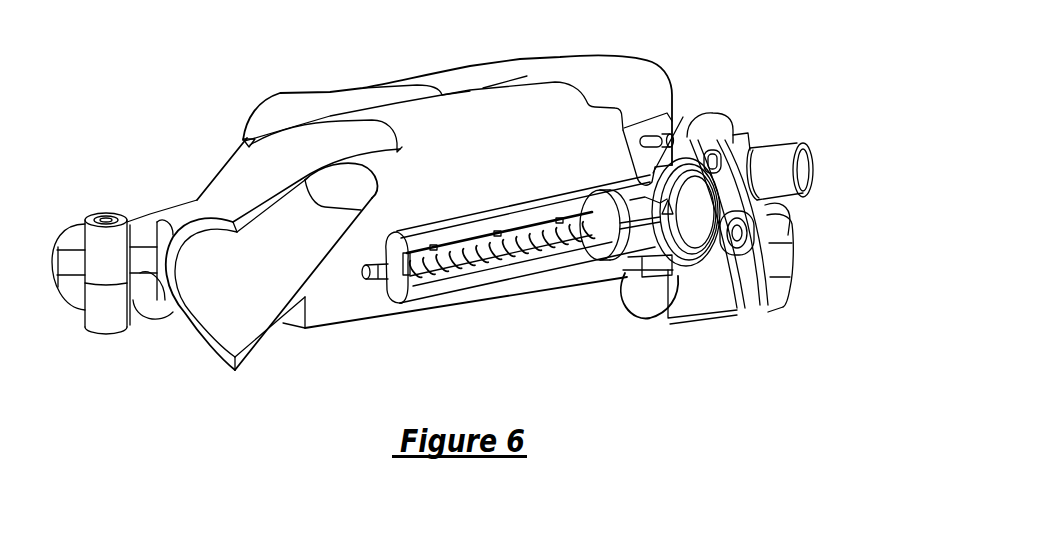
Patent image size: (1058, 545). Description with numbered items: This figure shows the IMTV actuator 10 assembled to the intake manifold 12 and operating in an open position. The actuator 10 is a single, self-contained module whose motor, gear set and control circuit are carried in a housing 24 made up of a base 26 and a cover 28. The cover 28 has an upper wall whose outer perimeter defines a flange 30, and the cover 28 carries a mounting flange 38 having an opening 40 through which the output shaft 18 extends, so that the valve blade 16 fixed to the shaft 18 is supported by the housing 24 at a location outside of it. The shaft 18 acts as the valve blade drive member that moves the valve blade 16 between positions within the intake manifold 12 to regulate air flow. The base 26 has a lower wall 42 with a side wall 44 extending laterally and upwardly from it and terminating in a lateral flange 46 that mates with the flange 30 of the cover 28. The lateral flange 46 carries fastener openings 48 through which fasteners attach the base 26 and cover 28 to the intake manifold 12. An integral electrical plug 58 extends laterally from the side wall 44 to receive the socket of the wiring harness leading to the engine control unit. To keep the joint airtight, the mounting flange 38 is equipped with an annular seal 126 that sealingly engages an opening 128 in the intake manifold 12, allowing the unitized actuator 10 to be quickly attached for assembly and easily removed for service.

The IMTV actuator 10 is at (766, 108).
The intake manifold 12 is at (668, 60).
The valve blade 16 is at (496, 255).
The output shaft 18 is at (386, 277).
The housing 24 is at (627, 330).
The base 26 is at (790, 270).
The cover 28 is at (718, 300).
The flange 30 is at (753, 318).
The mounting flange 38 is at (675, 268).
The opening 40 is at (625, 274).
The lower wall 42 is at (797, 248).
The side wall 44 is at (780, 278).
The lateral flange 46 is at (768, 313).
The fastener openings 48 is at (731, 116).
The electrical plug 58 is at (797, 147).
The annular seal 126 is at (625, 295).
The opening 128 is at (637, 182).